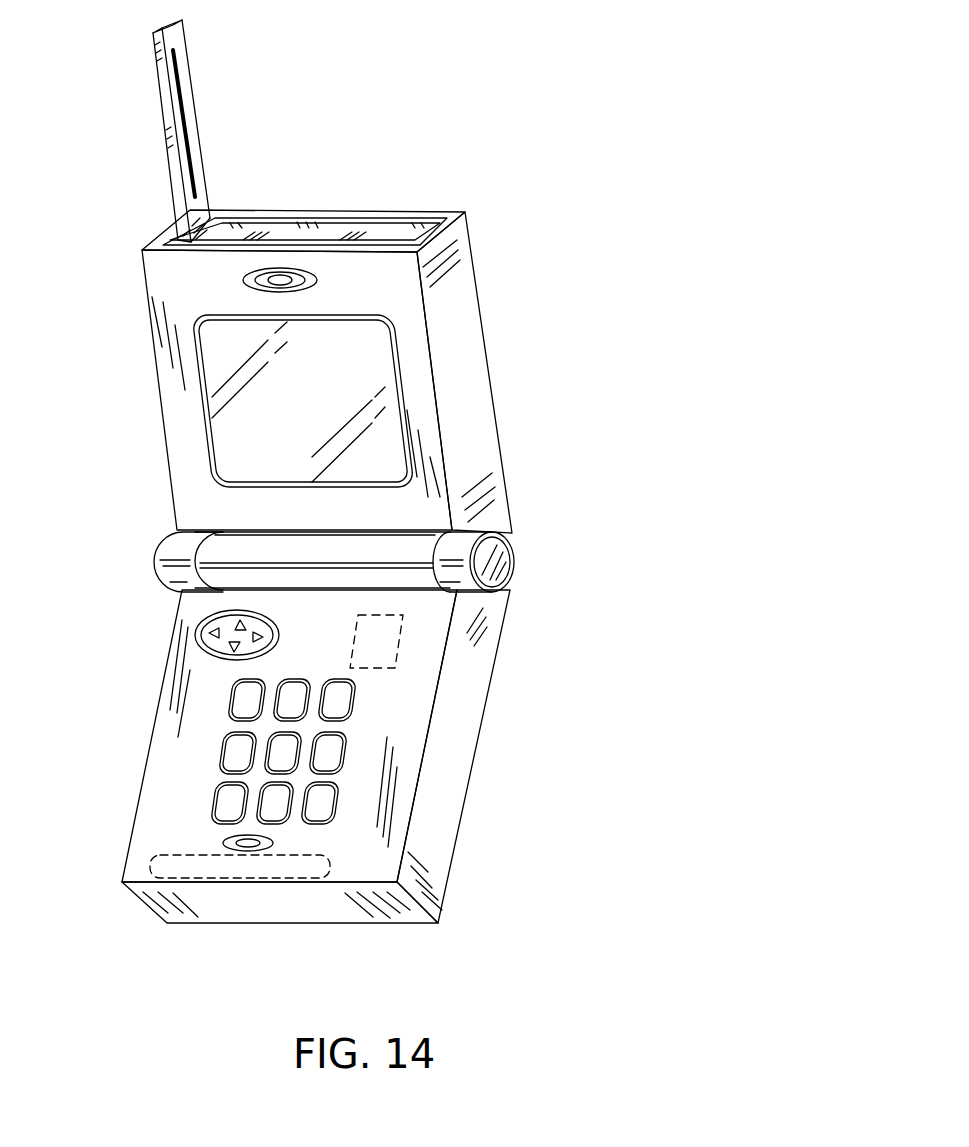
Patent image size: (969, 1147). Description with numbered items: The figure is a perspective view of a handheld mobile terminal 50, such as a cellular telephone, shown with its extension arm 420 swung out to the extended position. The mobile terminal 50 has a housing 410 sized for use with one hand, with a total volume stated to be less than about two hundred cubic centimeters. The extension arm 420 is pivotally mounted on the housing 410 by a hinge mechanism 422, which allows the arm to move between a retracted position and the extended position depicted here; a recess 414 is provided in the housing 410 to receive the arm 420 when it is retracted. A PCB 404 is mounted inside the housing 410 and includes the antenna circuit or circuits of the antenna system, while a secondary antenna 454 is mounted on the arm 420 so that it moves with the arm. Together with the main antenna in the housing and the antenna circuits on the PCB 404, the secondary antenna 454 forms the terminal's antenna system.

The mobile terminal 50 is at (545, 58).
The housing 410 is at (480, 440).
The recess 414 is at (390, 212).
The extension arm 420 is at (165, 123).
The hinge mechanism 422 is at (214, 220).
The PCB 404 is at (393, 665).
The secondary antenna 454 is at (182, 83).